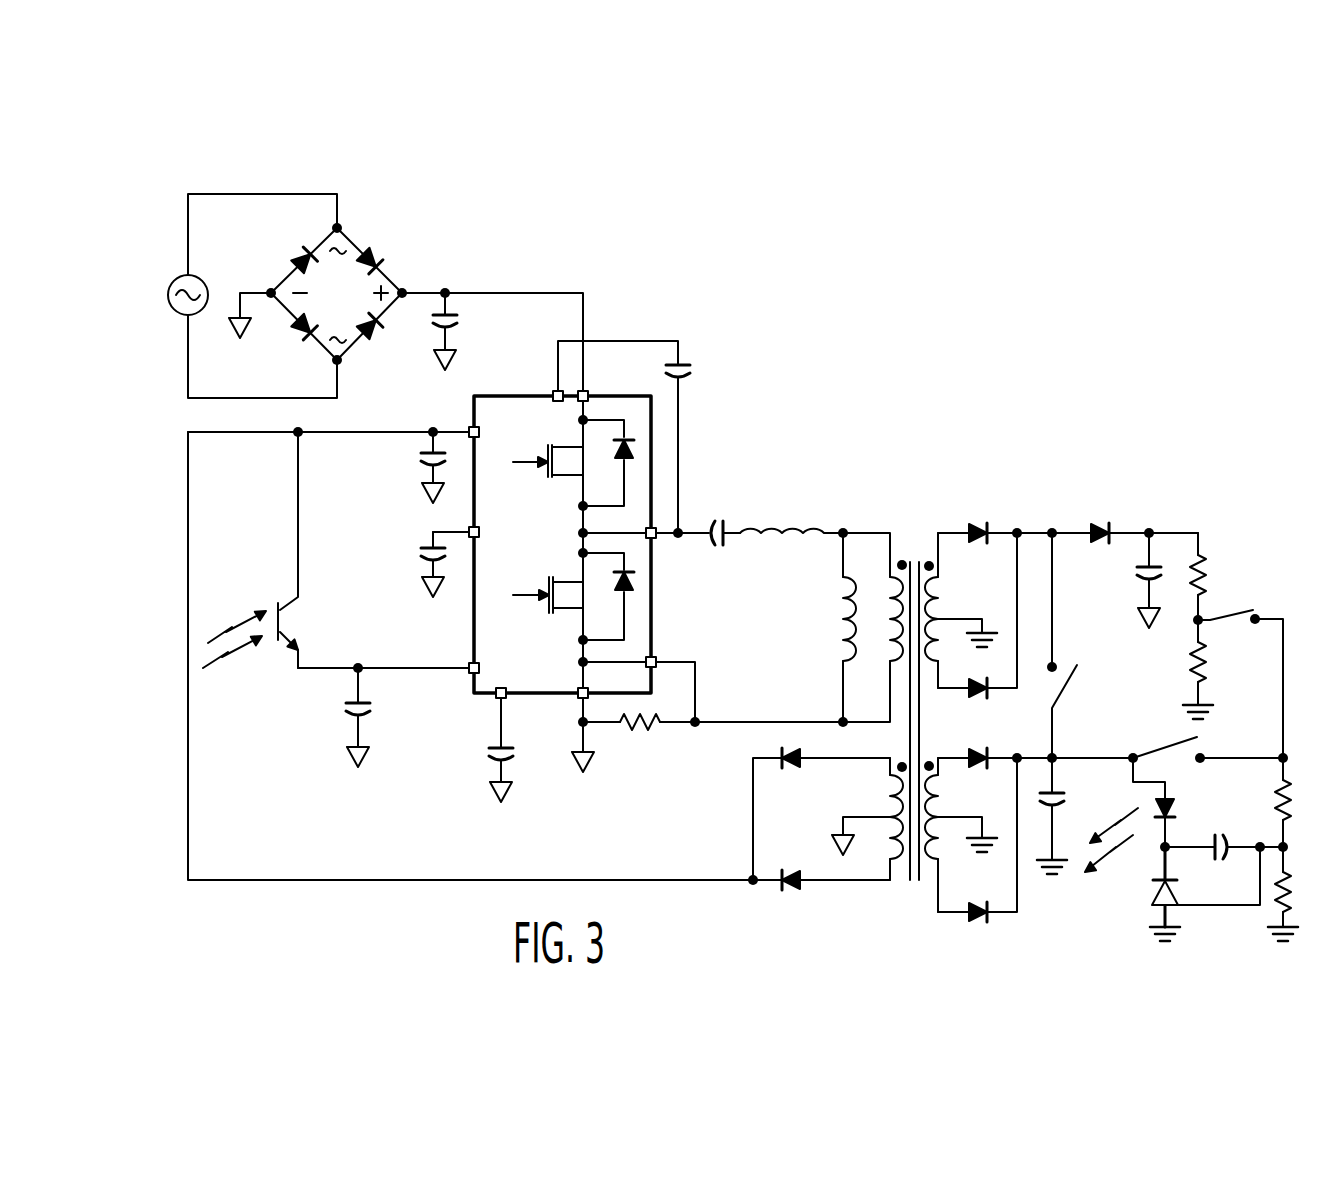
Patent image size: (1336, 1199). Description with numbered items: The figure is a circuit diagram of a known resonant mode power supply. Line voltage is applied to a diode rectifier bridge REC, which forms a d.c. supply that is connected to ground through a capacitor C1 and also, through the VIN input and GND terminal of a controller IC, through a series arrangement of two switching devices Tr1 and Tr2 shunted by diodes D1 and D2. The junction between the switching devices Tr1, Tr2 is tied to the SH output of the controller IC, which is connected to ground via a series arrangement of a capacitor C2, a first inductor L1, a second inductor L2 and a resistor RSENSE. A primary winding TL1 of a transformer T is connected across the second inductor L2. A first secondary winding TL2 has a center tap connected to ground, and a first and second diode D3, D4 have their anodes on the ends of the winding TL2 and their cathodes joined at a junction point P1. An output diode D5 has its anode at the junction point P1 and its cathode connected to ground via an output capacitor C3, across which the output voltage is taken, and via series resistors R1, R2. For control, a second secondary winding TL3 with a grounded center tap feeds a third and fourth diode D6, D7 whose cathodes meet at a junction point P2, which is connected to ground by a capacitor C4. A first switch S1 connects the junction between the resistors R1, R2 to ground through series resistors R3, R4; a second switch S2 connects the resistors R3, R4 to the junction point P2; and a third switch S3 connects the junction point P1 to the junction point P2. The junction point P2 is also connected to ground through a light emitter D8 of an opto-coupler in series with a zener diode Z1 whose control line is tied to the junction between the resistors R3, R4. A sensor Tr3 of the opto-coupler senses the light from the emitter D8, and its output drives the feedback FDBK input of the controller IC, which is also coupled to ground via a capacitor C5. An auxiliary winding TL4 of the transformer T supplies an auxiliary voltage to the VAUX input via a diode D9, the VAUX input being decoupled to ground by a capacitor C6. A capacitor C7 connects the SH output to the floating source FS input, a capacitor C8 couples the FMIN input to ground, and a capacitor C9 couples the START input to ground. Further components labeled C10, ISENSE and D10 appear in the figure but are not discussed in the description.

The diode rectifier bridge REC is at (391, 280).
The capacitor C1 is at (465, 329).
The controller IC is at (516, 396).
The floating source input FS is at (554, 392).
The VIN input VIN is at (588, 393).
The capacitor C8 is at (699, 449).
The VAUX input VAUX is at (470, 428).
The capacitor C7 is at (415, 465).
The START input START is at (470, 530).
The capacitor C10 is at (408, 564).
The switching device Tr1 is at (560, 445).
The diode D1 is at (622, 462).
The switching device Tr2 is at (576, 581).
The diode D2 is at (619, 592).
The SH output SH is at (655, 538).
The current sense pin ISENSE is at (656, 658).
The ground terminal GND is at (580, 697).
The resistor RSENSE is at (639, 738).
The FMIN input FMIN is at (498, 698).
The capacitor C9 is at (483, 750).
The feedback input FDBK is at (470, 665).
The sensor Tr3 is at (290, 600).
The capacitor C6 is at (340, 715).
The capacitor C2 is at (722, 514).
The first inductor L1 is at (791, 512).
The second inductor L2 is at (792, 627).
The primary winding TL1 is at (900, 600).
The transformer T is at (914, 544).
The first secondary winding TL2 is at (940, 597).
The first diode D3 is at (969, 518).
The junction point P1 is at (1015, 522).
The second diode D4 is at (970, 696).
The output diode D5 is at (1097, 518).
The output capacitor C3 is at (1132, 578).
The resistor R1 is at (1215, 587).
The resistor R2 is at (1186, 680).
The first switch S1 is at (1240, 684).
The third switch S3 is at (1053, 643).
The second secondary winding TL3 is at (942, 789).
The third diode D6 is at (969, 746).
The junction point P2 is at (1015, 750).
The fourth diode D7 is at (964, 928).
The capacitor C4 is at (1068, 813).
The second switch S2 is at (1208, 758).
The light emitter D8 is at (1145, 817).
The capacitor C5 is at (1224, 870).
The zener diode Z1 is at (1153, 894).
The resistor R3 is at (1300, 815).
The resistor R4 is at (1296, 906).
The diode D9 is at (819, 816).
The diode D10 is at (821, 896).
The auxiliary winding TL4 is at (898, 801).